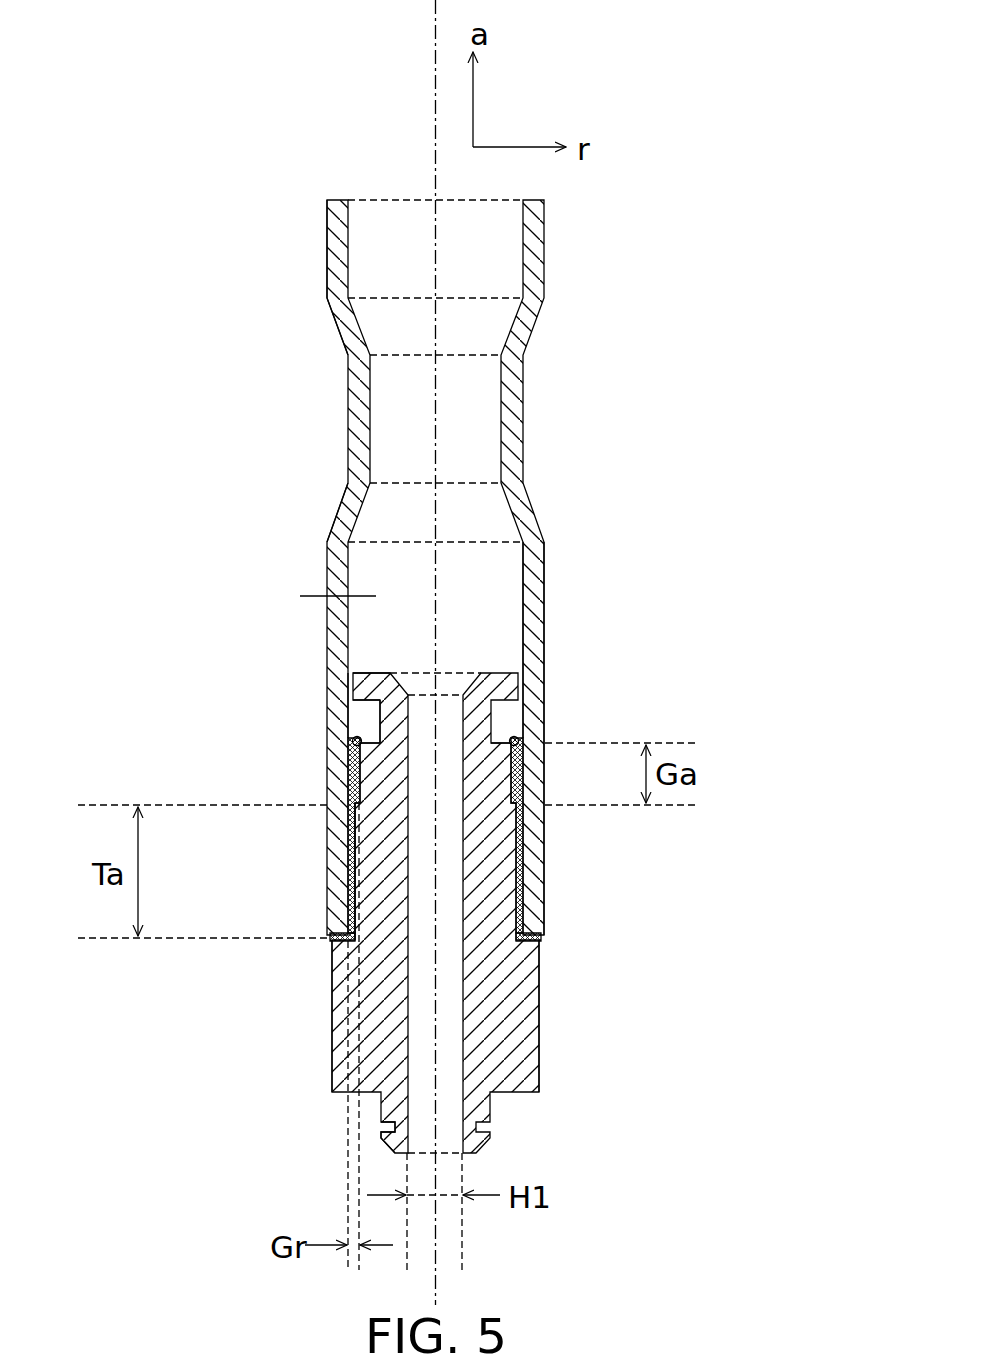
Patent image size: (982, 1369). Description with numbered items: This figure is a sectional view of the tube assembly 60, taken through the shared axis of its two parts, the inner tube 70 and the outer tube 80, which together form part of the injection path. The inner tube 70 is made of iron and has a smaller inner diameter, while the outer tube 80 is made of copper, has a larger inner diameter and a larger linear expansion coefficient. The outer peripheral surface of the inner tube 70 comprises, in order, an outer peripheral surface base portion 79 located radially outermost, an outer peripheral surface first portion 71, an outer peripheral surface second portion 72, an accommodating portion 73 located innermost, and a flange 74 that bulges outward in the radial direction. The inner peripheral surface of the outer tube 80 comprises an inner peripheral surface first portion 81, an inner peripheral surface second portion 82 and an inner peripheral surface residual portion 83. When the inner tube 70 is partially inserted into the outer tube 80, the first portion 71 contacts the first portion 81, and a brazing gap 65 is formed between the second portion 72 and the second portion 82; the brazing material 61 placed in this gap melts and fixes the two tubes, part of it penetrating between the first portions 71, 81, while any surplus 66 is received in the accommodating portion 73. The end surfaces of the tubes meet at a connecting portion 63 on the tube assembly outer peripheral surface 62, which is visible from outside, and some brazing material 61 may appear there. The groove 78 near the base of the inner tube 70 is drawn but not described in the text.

The tube assembly 60 is at (142, 108).
The brazing material 61 is at (352, 802).
The tube assembly outer peripheral surface 62 is at (545, 421).
The connecting portion 63 is at (322, 936).
The brazing gap 65 is at (356, 738).
The surplus 66 is at (348, 699).
The inner tube 70 is at (667, 1125).
The outer peripheral surface first portion 71 is at (350, 868).
The outer peripheral surface second portion 72 is at (360, 782).
The accommodating portion 73 is at (372, 700).
The flange 74 is at (354, 668).
The engagement groove 78 is at (395, 1140).
The outer peripheral surface base portion 79 is at (332, 1012).
The outer tube 80 is at (668, 230).
The inner peripheral surface first portion 81 is at (545, 975).
The inner peripheral surface second portion 82 is at (545, 690).
The inner peripheral surface residual portion 83 is at (348, 248).